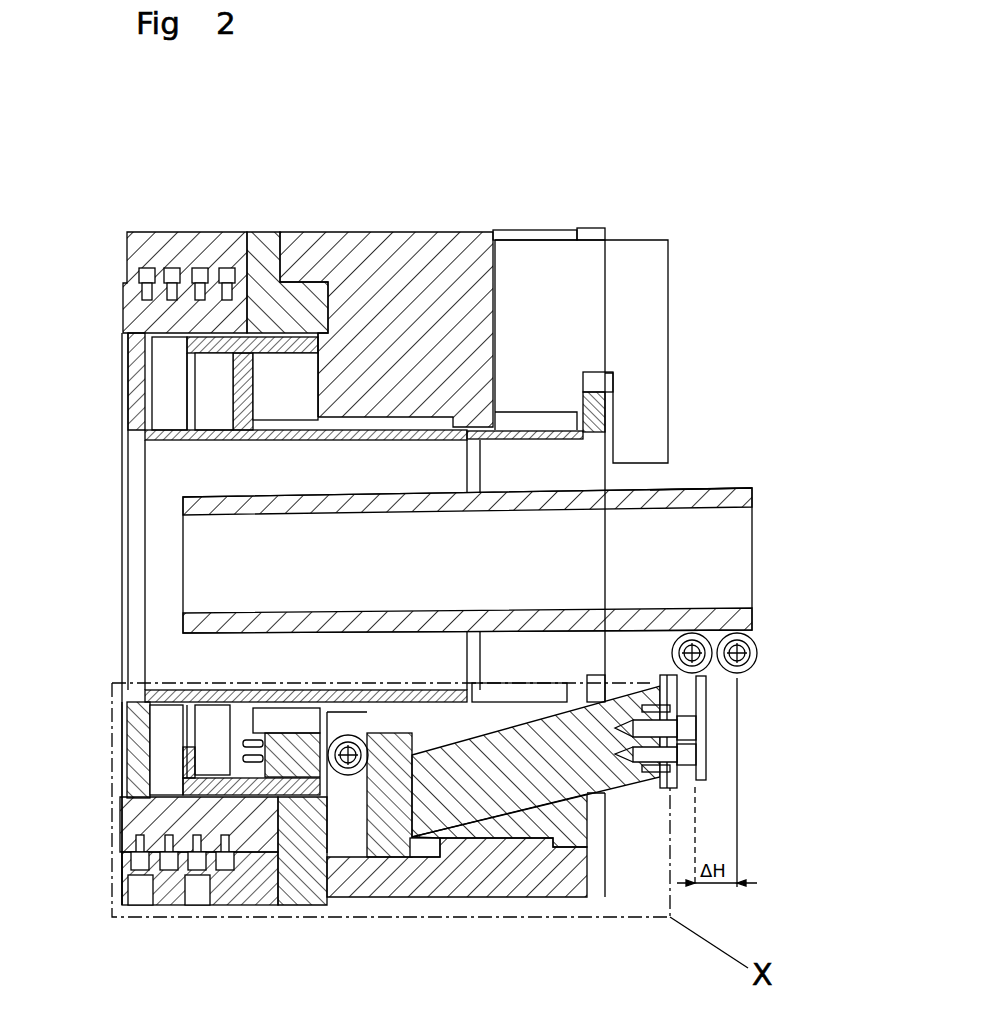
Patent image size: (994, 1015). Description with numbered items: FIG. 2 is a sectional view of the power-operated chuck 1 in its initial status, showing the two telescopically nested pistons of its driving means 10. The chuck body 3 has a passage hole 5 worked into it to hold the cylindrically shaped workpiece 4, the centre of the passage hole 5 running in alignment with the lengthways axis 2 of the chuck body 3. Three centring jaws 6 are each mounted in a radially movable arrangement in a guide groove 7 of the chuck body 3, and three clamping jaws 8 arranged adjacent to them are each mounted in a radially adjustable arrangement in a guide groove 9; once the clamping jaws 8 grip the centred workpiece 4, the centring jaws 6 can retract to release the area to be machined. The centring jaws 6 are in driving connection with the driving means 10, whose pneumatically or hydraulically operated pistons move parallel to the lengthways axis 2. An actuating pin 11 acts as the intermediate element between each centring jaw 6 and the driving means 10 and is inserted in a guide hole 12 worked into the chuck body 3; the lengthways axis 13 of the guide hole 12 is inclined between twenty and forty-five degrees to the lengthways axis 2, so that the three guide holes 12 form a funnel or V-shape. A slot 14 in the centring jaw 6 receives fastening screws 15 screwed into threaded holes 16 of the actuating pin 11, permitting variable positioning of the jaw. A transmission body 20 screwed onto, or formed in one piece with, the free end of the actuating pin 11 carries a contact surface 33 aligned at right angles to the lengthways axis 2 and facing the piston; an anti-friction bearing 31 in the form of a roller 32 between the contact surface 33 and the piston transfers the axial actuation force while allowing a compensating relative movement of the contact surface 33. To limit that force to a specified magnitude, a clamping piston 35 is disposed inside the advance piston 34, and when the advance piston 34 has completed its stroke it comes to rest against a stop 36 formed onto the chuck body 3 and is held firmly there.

The power-operated chuck 1 is at (532, 127).
The lengthways axis 2 is at (732, 553).
The chuck body 3 is at (115, 838).
The workpiece 4 is at (712, 493).
The passage hole 5 is at (167, 690).
The centring jaws 6 is at (693, 777).
The guide groove 7 is at (607, 842).
The clamping jaws 8 is at (642, 303).
The guide groove 9 is at (548, 233).
The driving means 10 is at (252, 335).
The actuating pin 11 is at (447, 802).
The guide hole 12 is at (540, 838).
The lengthways axis of the guide hole 13 is at (495, 780).
The slot 14 is at (700, 707).
The fastening screws 15 is at (690, 760).
The threaded holes 16 is at (615, 744).
The transmission body 20 is at (340, 812).
The anti-friction bearing 31 is at (287, 793).
The roller 32 is at (320, 776).
The contact surface 33 is at (297, 825).
The advance piston 34 is at (183, 785).
The clamping piston 35 is at (127, 714).
The stop 36 is at (323, 400).